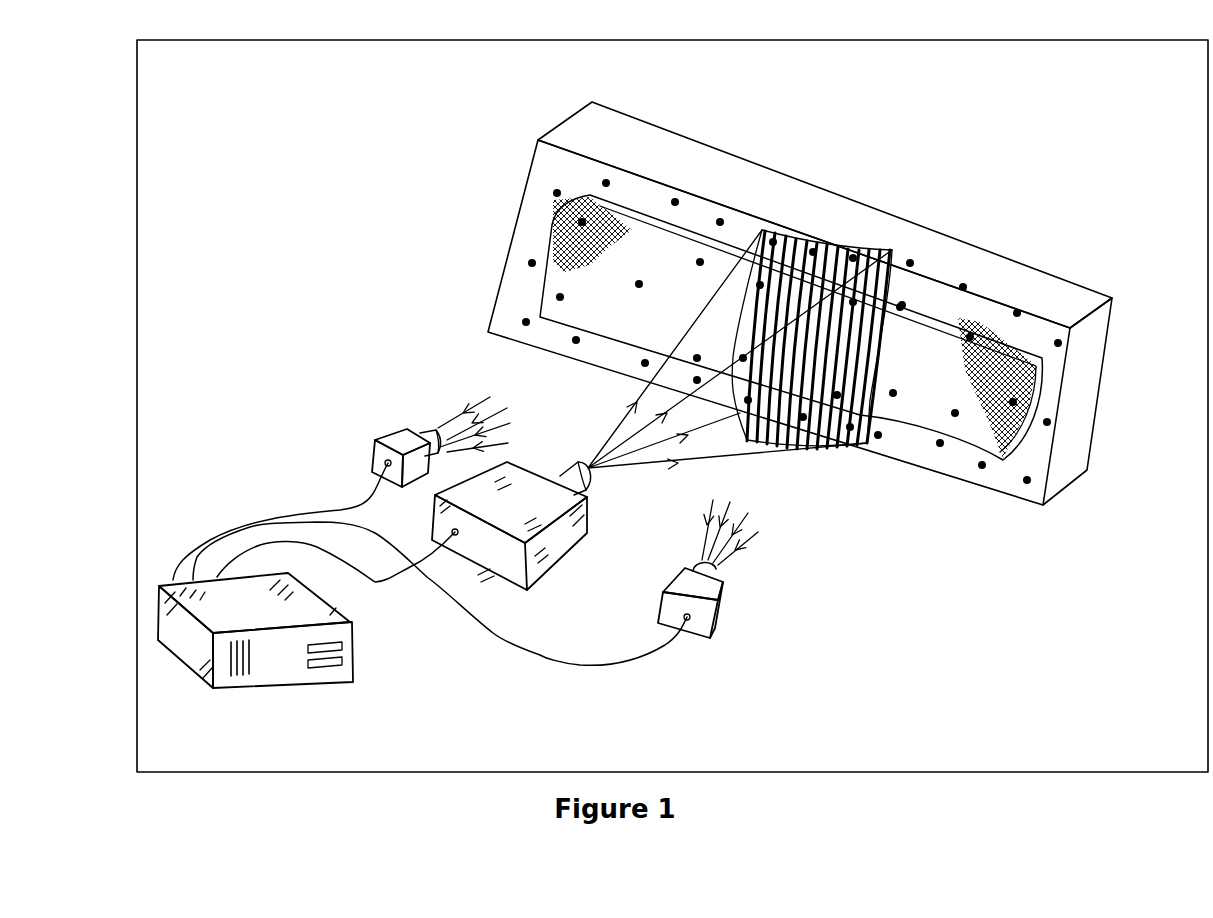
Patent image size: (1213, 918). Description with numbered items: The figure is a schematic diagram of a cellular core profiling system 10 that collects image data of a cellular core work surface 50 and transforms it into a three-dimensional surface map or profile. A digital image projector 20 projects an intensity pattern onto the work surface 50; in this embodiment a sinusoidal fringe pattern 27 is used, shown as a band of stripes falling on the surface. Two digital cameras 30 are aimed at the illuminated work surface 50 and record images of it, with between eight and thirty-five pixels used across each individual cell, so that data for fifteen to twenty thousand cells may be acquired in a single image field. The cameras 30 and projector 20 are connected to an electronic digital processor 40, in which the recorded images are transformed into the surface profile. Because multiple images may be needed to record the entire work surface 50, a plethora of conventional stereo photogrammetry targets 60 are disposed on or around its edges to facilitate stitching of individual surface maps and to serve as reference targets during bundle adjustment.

The cellular core profiling system 10 is at (413, 152).
The digital image projector 20 is at (543, 577).
The sinusoidal fringe pattern 27 is at (770, 222).
The digital cameras 30 is at (375, 440).
The electronic digital processor 40 is at (180, 657).
The cellular core work surface 50 is at (933, 318).
The stereo photogrammetry targets 60 is at (606, 183).